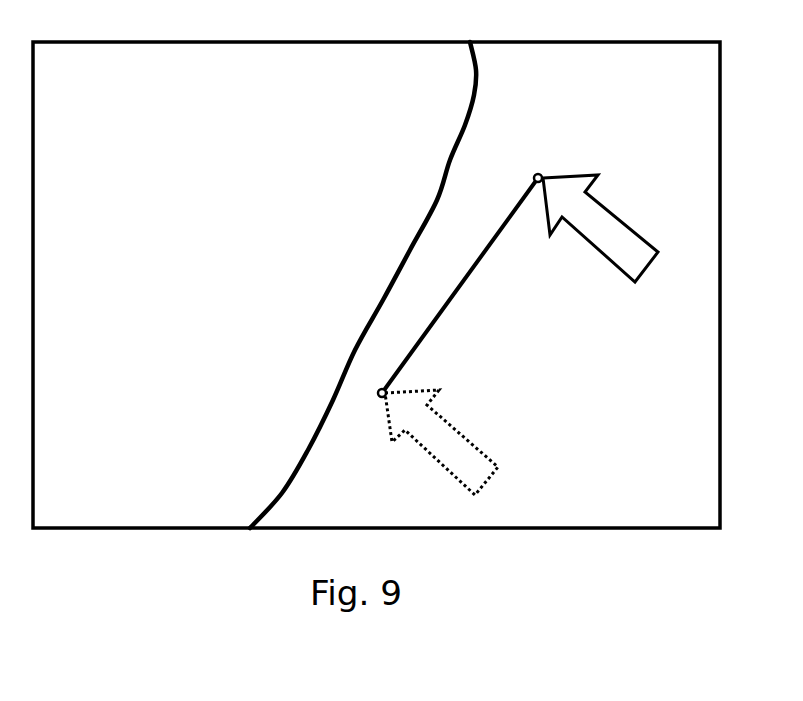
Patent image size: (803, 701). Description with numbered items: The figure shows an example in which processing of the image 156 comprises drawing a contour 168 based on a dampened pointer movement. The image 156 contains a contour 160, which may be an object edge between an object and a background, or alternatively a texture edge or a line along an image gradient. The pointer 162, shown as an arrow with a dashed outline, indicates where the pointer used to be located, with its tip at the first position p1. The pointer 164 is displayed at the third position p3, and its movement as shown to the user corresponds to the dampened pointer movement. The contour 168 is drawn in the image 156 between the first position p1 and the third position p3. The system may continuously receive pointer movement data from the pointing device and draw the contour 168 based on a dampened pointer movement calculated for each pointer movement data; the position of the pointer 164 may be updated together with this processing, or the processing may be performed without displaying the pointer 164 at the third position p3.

The image 156 is at (623, 530).
The contour 160 is at (320, 410).
The pointer 162 is at (465, 432).
The pointer 164 is at (590, 257).
The contour 168 is at (458, 300).
The first position p1 is at (377, 405).
The third position p3 is at (546, 173).